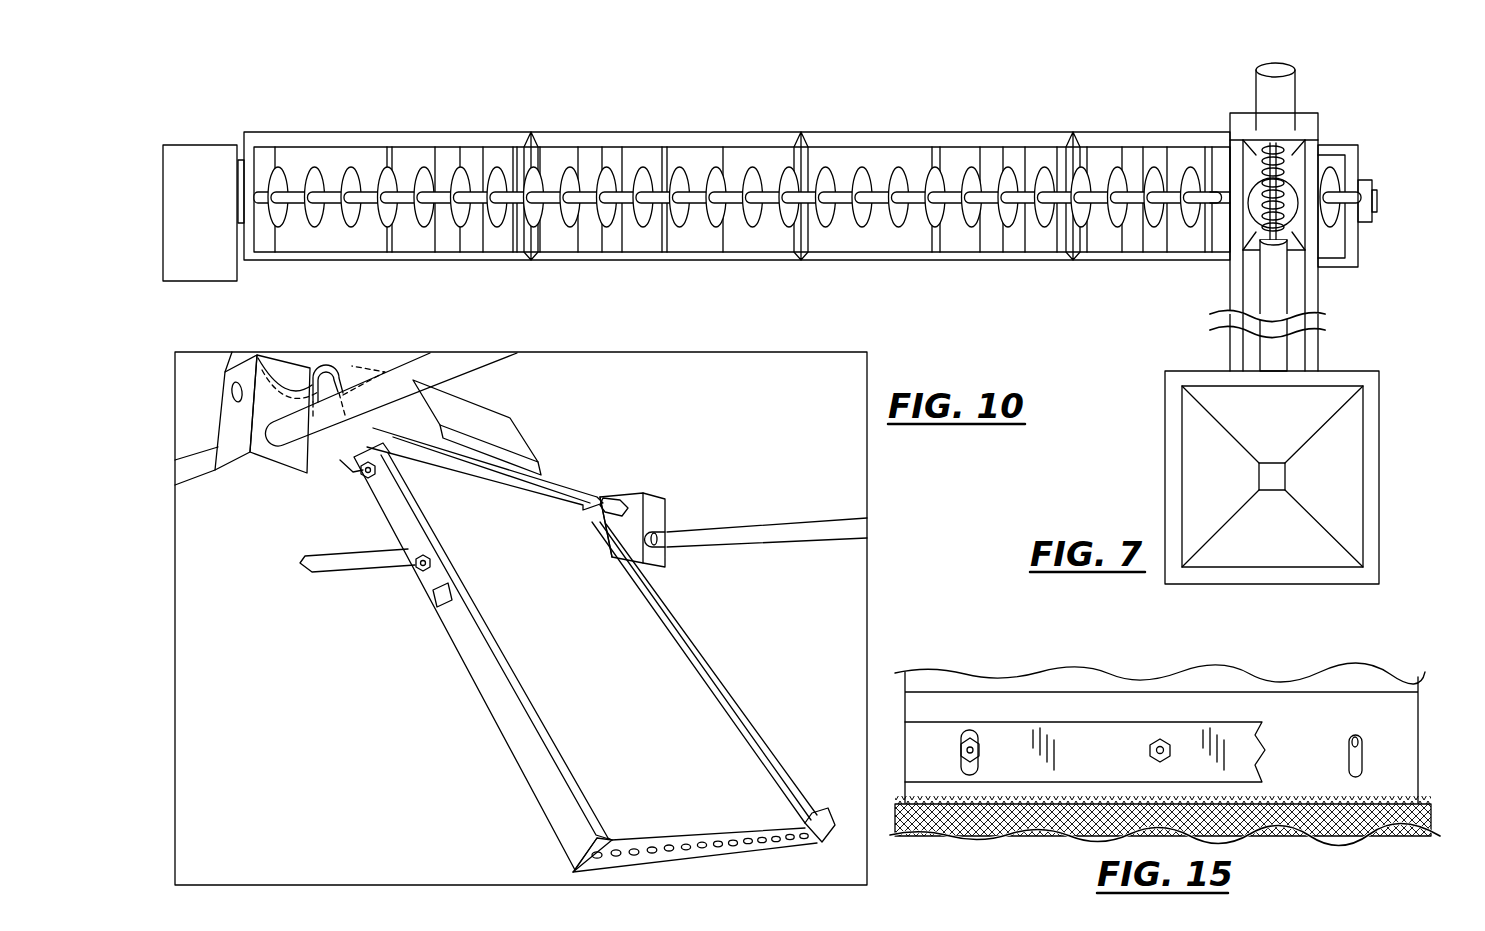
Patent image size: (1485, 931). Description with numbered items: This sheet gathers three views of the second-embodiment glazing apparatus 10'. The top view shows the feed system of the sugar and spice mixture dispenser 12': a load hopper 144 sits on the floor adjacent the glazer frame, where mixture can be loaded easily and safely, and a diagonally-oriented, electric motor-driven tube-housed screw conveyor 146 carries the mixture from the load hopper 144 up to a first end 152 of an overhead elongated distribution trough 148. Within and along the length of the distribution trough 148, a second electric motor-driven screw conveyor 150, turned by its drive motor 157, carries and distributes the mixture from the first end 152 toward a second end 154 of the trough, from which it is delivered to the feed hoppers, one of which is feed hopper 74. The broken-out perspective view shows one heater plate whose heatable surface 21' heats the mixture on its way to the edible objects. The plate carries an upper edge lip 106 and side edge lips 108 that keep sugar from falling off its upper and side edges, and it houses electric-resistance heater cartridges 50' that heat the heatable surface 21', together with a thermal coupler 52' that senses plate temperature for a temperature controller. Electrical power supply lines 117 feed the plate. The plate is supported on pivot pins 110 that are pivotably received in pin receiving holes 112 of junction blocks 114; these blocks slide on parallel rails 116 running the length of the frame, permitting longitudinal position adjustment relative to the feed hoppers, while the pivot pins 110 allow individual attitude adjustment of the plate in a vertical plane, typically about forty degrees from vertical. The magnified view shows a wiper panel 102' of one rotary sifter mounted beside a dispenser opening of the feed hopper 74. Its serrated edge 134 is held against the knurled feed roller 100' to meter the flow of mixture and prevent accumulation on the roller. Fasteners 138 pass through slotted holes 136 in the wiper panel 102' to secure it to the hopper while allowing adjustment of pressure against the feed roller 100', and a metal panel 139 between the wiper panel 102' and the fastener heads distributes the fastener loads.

In FIG. 7, the drive motor 157 is at (200, 162).
In FIG. 7, the second end 154 is at (275, 157).
In FIG. 7, the distribution trough 148 is at (738, 137).
In FIG. 7, the second screw conveyor 150 is at (898, 173).
In FIG. 7, the apparatus 10' is at (1113, 138).
In FIG. 7, the sugar and spice mixture dispenser 12' is at (737, 167).
In FIG. 7, the tube-housed screw conveyor 146 is at (1283, 178).
In FIG. 7, the first end 152 is at (1340, 246).
In FIG. 7, the load hopper 144 is at (1262, 548).
In FIG. 10, the electrical power supply lines 117 is at (328, 362).
In FIG. 10, the pin receiving holes 112 is at (237, 392).
In FIG. 10, the junction blocks 114 is at (262, 452).
In FIG. 10, the pivot pins 110 is at (343, 432).
In FIG. 10, the parallel rails 116 is at (480, 365).
In FIG. 10, the upper edge lip 106 is at (527, 498).
In FIG. 10, the heatable surface 21' is at (695, 755).
In FIG. 10, the side edge lips 108 is at (535, 703).
In FIG. 10, the electric-resistance heater cartridges 50' is at (664, 829).
In FIG. 10, the thermal coupler 52' is at (713, 857).
In FIG. 15, the feed hopper 74 is at (943, 680).
In FIG. 15, the wiper panel 102' is at (1154, 695).
In FIG. 15, the metal panel 139 is at (1095, 738).
In FIG. 15, the fasteners 138 is at (970, 742).
In FIG. 15, the slotted holes 136 is at (1358, 750).
In FIG. 15, the serrated edge 134 is at (1308, 800).
In FIG. 15, the feed roller 100' is at (1165, 841).